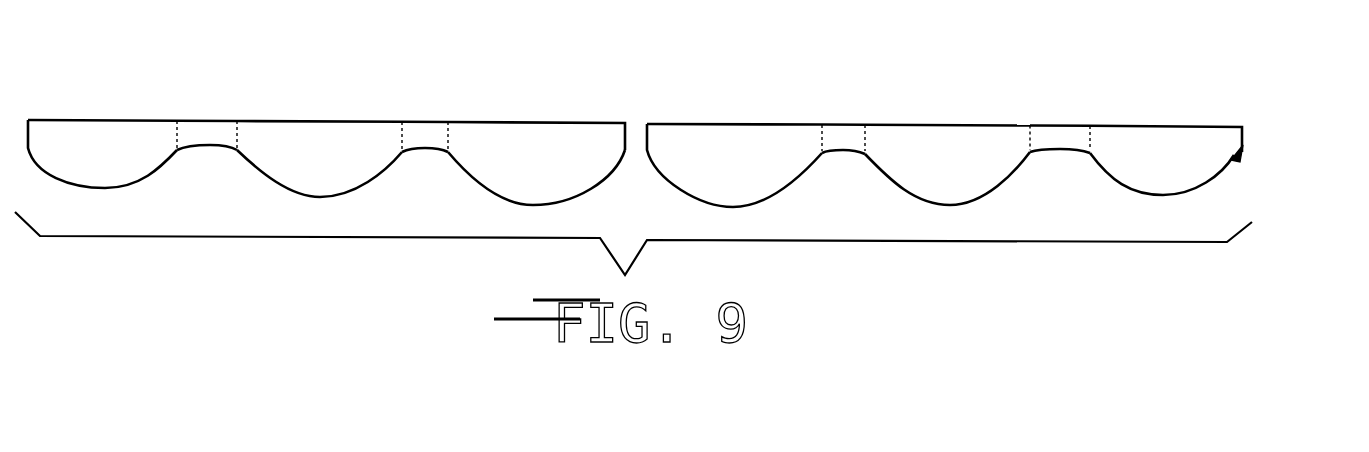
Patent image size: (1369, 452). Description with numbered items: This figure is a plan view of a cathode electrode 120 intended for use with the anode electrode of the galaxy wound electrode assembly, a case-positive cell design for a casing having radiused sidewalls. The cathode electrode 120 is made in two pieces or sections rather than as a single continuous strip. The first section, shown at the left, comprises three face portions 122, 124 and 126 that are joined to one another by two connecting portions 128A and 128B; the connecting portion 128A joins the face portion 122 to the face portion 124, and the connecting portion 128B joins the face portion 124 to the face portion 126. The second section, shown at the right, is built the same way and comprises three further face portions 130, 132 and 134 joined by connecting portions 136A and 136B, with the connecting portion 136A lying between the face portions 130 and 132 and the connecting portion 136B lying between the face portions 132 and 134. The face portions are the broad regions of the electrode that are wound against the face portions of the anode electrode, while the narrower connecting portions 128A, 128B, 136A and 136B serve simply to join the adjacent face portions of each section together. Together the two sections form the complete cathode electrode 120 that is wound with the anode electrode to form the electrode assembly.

The cathode electrode 120 is at (687, 145).
The face portion 122 is at (145, 141).
The face portion 124 is at (323, 144).
The face portion 126 is at (516, 138).
The connecting portion 128A is at (208, 133).
The connecting portion 128B is at (428, 150).
The face portion 130 is at (718, 148).
The face portion 132 is at (963, 141).
The face portion 134 is at (1135, 147).
The connecting portion 136A is at (842, 153).
The connecting portion 136B is at (1063, 152).